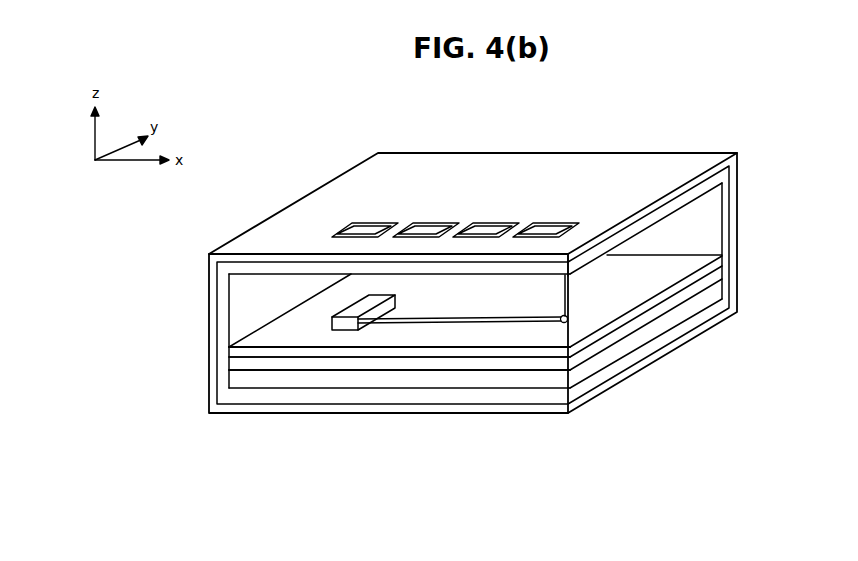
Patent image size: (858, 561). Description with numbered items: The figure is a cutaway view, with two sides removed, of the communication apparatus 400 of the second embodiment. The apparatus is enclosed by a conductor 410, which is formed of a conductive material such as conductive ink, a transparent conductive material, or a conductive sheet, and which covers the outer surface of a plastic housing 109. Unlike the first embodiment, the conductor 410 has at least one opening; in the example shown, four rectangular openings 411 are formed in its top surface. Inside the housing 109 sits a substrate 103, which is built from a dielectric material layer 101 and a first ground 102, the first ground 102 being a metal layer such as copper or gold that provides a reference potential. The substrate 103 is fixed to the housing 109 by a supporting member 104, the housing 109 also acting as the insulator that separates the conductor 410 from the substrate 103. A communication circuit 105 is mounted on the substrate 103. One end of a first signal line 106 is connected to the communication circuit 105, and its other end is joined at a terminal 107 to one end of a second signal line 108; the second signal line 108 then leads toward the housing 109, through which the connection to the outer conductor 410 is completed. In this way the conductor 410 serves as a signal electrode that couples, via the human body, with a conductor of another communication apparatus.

The communication apparatus 400 is at (534, 113).
The conductor 410 is at (625, 180).
The rectangular openings 411 is at (577, 216).
The housing 109 is at (729, 222).
The dielectric material layer 101 is at (262, 350).
The first ground 102 is at (305, 360).
The substrate 103 is at (318, 458).
The supporting member 104 is at (356, 386).
The communication circuit 105 is at (368, 321).
The first signal line 106 is at (453, 324).
The terminal 107 is at (562, 322).
The second signal line 108 is at (567, 298).